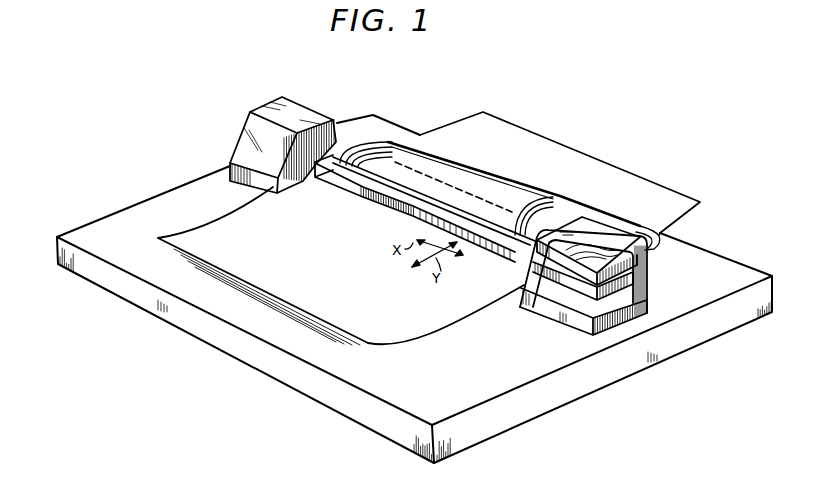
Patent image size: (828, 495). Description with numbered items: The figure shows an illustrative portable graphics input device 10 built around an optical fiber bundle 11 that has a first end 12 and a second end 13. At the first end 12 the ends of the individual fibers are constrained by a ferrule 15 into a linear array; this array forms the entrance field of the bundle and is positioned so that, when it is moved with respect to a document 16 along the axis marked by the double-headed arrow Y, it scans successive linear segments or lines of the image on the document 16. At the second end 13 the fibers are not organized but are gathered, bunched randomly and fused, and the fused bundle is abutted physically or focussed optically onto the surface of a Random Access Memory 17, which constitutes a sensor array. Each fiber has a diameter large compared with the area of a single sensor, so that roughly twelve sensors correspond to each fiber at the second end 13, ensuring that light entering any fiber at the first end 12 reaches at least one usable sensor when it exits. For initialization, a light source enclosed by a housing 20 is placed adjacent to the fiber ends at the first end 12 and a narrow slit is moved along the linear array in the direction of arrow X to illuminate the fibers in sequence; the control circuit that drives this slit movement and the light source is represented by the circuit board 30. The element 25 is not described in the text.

The portable graphics input device 10 is at (483, 373).
The optical fiber bundle 11 is at (546, 193).
The first end 12 is at (414, 194).
The second end 13 is at (601, 242).
The ferrule 15 is at (357, 187).
The document 16 is at (165, 245).
The Random Access Memory (RAM) 17 is at (630, 270).
The housing 20 is at (450, 321).
The support block 25 is at (307, 115).
The circuit board 30 is at (530, 308).